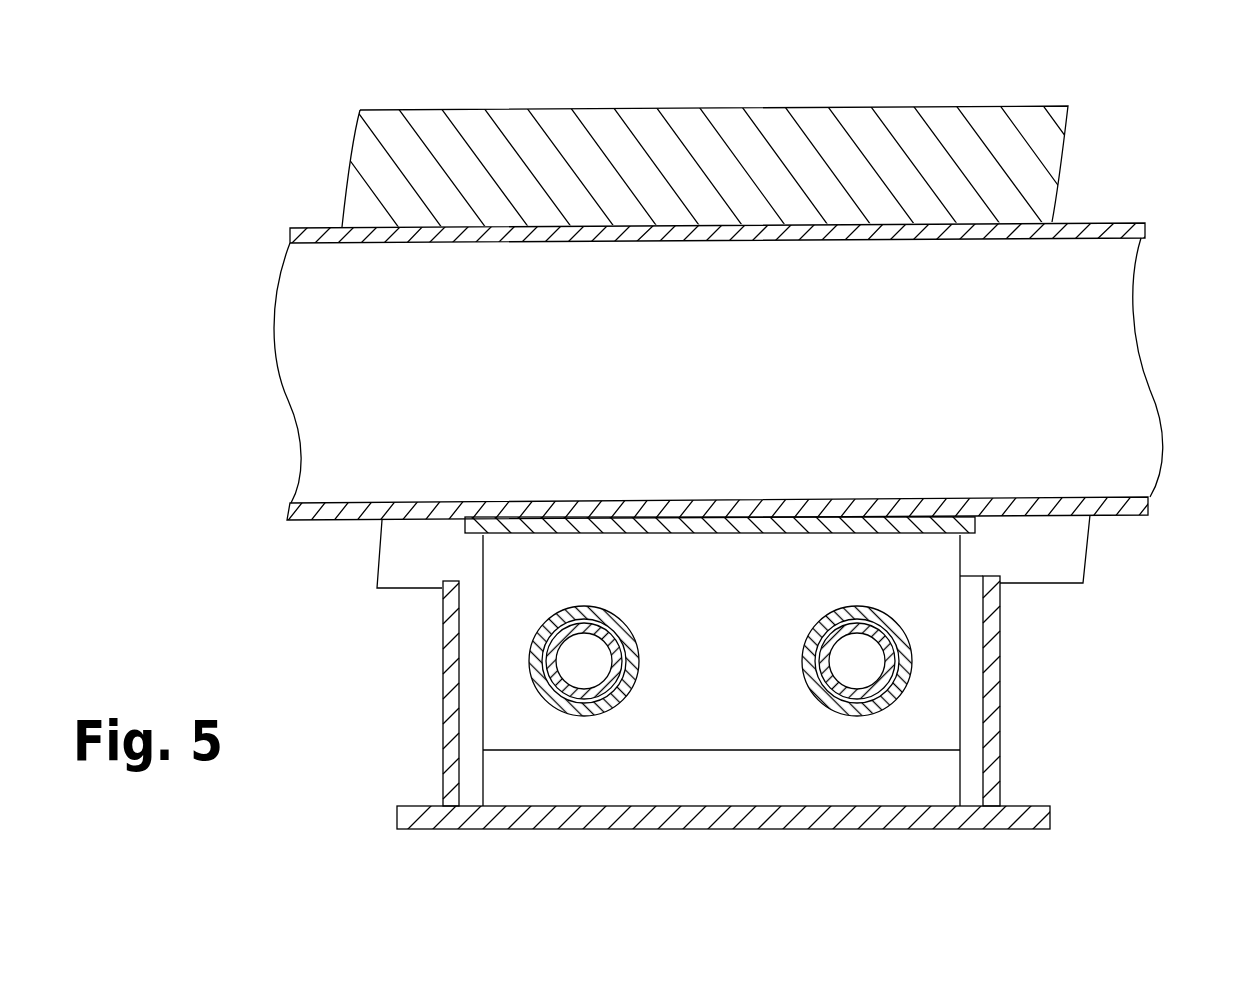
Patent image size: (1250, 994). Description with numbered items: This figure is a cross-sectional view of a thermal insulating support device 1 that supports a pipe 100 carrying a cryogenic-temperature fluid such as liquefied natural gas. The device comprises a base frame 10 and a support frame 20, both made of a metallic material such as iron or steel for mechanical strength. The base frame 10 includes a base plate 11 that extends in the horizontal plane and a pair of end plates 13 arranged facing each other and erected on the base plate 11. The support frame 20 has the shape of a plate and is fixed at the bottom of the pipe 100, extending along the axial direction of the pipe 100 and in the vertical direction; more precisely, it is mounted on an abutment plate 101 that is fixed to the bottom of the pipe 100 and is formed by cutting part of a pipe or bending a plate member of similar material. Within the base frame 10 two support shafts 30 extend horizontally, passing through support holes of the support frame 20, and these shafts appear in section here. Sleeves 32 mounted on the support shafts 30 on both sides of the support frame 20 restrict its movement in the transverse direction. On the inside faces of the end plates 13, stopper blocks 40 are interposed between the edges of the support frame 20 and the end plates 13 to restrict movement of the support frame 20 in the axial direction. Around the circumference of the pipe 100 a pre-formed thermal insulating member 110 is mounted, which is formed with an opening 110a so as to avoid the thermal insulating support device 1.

The thermal insulating member 110 is at (725, 116).
The pipe 100 is at (750, 370).
The abutment plate 101 is at (930, 520).
The opening 110a is at (380, 558).
The thermal insulating support device 1 is at (774, 711).
The base frame 10 is at (744, 706).
The base plate 11 is at (405, 822).
The end plate 13 is at (445, 693).
The stopper block 40 is at (467, 642).
The support frame 20 is at (738, 633).
The support shaft 30 is at (600, 676).
The sleeve 32 is at (553, 702).